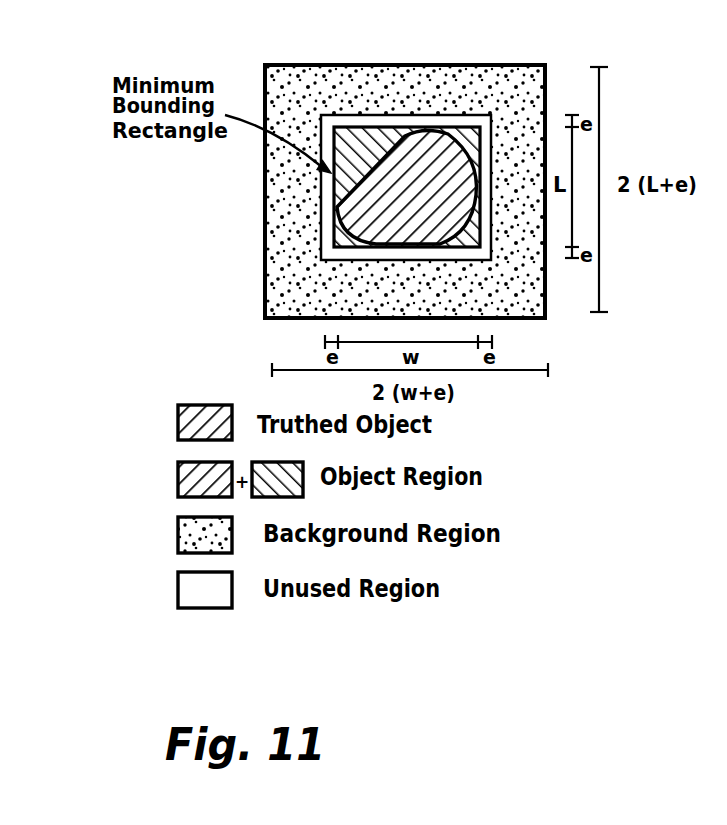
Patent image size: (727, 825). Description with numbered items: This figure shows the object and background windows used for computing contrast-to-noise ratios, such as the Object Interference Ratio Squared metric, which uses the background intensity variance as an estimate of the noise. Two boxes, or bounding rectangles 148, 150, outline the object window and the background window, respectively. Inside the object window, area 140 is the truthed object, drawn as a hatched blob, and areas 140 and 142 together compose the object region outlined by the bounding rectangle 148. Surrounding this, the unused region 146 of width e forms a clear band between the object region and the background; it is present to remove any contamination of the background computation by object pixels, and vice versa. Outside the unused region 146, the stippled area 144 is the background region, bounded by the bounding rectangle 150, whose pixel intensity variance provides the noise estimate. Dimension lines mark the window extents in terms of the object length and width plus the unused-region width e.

The truthed object 140 is at (413, 140).
The object region area 142 is at (467, 127).
The background region 144 is at (302, 288).
The unused region 146 is at (368, 118).
The object bounding rectangle 148 is at (338, 212).
The background bounding rectangle 150 is at (265, 188).